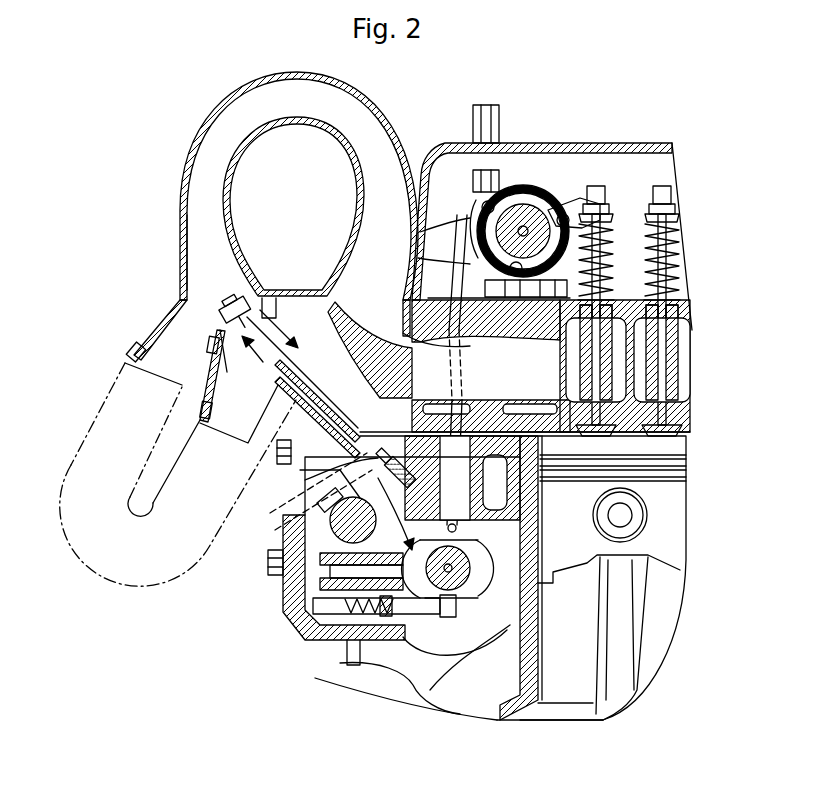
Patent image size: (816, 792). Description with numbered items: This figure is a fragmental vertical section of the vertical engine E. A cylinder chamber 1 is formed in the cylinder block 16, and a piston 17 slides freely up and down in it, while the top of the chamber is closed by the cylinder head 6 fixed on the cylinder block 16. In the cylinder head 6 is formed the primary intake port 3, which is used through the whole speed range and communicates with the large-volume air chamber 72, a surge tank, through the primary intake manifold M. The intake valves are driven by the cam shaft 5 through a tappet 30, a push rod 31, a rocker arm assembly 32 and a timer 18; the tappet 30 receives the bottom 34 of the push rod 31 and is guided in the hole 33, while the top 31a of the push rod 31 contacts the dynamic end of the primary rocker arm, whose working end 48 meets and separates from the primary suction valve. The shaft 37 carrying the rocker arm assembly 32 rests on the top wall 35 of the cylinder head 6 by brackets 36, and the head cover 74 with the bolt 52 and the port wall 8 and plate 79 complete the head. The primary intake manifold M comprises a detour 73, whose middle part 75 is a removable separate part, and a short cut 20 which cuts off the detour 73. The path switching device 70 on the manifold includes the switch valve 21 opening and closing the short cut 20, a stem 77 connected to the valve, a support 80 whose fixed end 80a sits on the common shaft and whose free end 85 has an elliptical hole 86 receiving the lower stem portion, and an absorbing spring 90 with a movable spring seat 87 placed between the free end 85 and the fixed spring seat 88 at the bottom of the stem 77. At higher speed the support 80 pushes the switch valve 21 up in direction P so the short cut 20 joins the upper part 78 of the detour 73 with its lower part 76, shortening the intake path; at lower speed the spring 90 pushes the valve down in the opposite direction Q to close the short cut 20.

The primary intake manifold M is at (180, 203).
The air chamber 72 is at (276, 216).
The detour 73 is at (88, 424).
The middle part of the detour 75 is at (178, 493).
The lower part of the detour 76 is at (172, 345).
The switch valve 21 is at (227, 316).
The short cut 20 is at (271, 296).
The stem 77 is at (318, 345).
The direction arrow Q is at (282, 326).
The direction P is at (249, 363).
The upper part of the detour 78 is at (241, 378).
The bracket 79 is at (248, 443).
The path switching device 70 is at (366, 342).
The intake port 8 is at (403, 333).
The bracket 36 is at (418, 258).
The top of the push rod 31a is at (420, 232).
The head cover 74 is at (646, 143).
The vertical engine E is at (599, 134).
The rocker arm assembly 32 is at (531, 174).
The shaft 37 is at (540, 185).
The working end of the primary rocker arm 48 is at (468, 210).
The rocker arm 52 is at (566, 204).
The top wall of the cylinder head 35 is at (528, 292).
The cylinder head 6 is at (688, 362).
The tappet 30 is at (505, 525).
The primary intake port 3 is at (551, 366).
The hole 33 is at (494, 384).
The push rod 31 is at (450, 408).
The bottom of the push rod 34 is at (518, 488).
The cam shaft 5 is at (500, 545).
The piston 17 is at (672, 548).
The cylinder chamber 1 is at (542, 628).
The support 80 is at (322, 515).
The fixed end of the support 80a is at (274, 556).
The movable spring seat 87 is at (320, 480).
The elliptical hole 86 is at (330, 488).
The absorbing spring 90 is at (361, 509).
The free end of the support 85 is at (390, 442).
The fixed spring seat 88 is at (447, 549).
The timer 18 is at (441, 638).
The cylinder block 16 is at (492, 658).